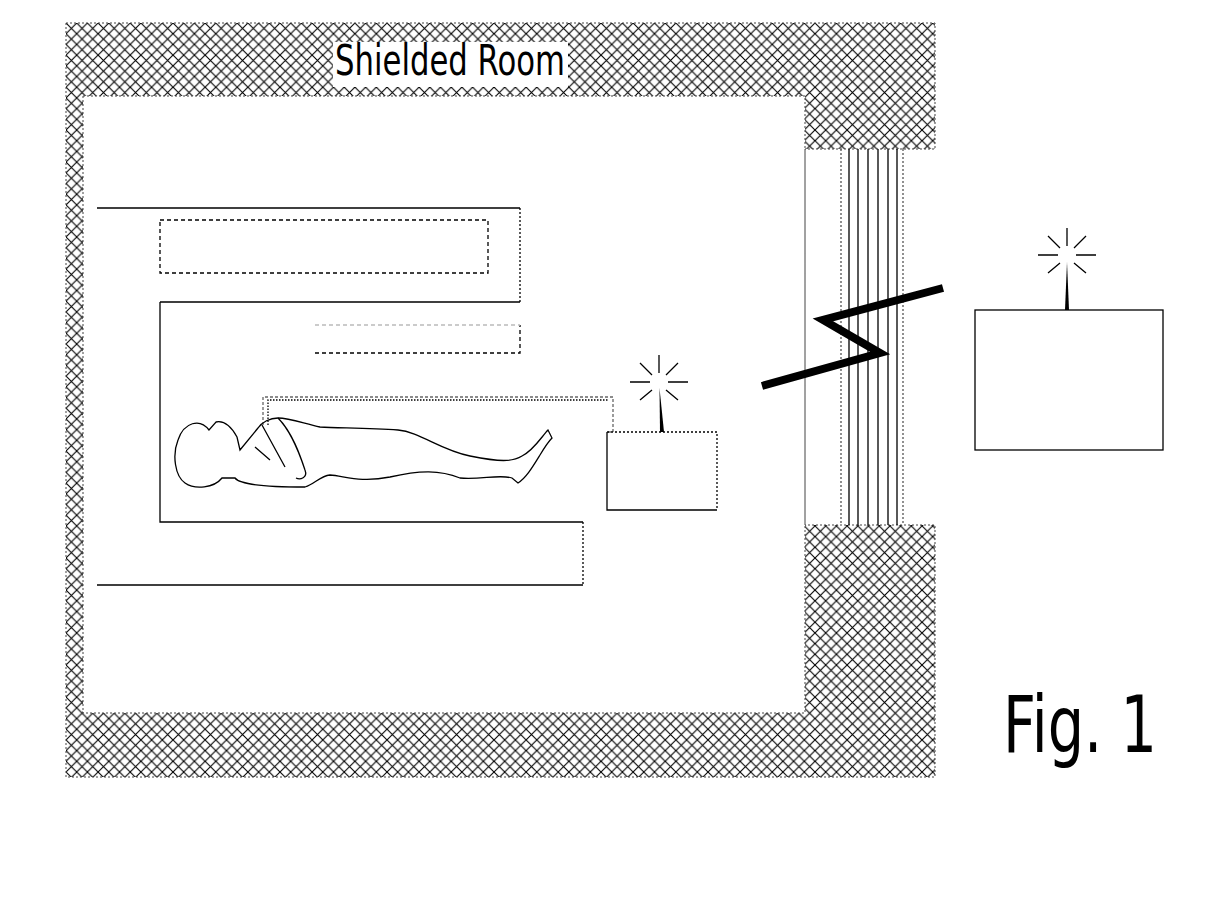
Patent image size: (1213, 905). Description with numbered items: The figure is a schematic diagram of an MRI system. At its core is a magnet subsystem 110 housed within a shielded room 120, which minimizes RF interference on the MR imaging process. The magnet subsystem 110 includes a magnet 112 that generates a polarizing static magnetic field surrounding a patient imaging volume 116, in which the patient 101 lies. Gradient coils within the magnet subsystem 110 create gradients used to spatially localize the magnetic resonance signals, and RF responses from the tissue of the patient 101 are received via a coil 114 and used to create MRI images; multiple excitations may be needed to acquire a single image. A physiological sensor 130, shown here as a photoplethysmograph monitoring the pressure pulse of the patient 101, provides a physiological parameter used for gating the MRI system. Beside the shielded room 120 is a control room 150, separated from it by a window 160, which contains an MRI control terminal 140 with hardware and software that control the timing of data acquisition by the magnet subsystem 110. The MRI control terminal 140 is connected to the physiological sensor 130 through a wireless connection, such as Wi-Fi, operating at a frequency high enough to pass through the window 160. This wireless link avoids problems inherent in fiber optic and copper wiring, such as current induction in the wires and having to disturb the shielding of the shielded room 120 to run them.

The patient 101 is at (457, 478).
The magnet subsystem 110 is at (172, 208).
The magnet 112 is at (160, 230).
The coil 114 is at (417, 353).
The patient imaging volume 116 is at (200, 380).
The shielded room 120 is at (729, 127).
The physiological sensor 130 is at (717, 447).
The MRI control terminal 140 is at (1038, 450).
The control room 150 is at (1089, 127).
The window 160 is at (841, 262).